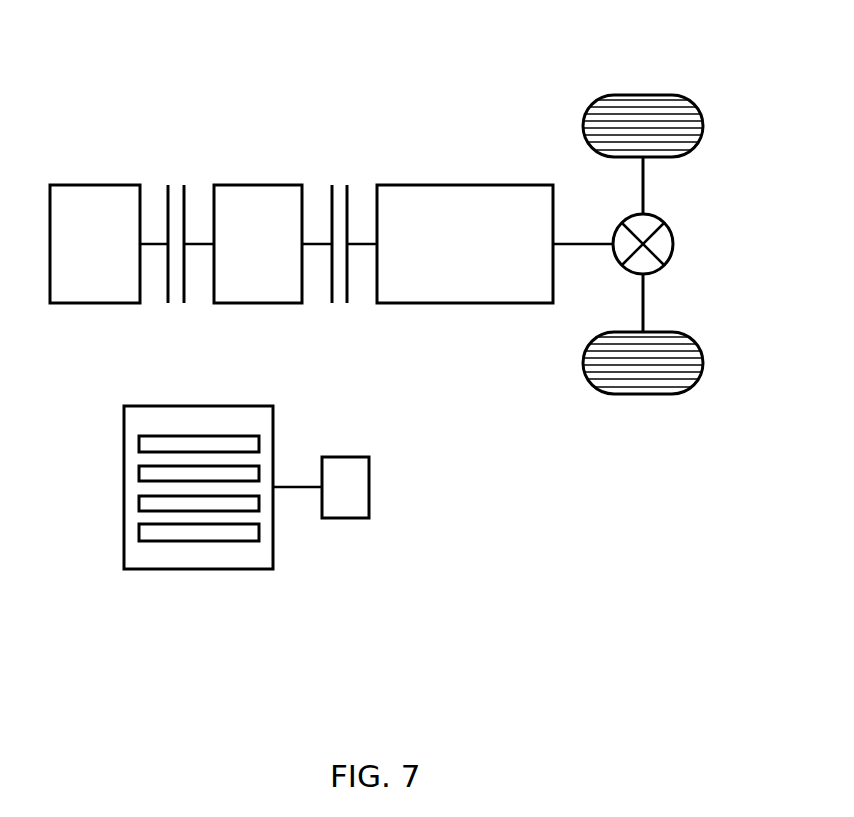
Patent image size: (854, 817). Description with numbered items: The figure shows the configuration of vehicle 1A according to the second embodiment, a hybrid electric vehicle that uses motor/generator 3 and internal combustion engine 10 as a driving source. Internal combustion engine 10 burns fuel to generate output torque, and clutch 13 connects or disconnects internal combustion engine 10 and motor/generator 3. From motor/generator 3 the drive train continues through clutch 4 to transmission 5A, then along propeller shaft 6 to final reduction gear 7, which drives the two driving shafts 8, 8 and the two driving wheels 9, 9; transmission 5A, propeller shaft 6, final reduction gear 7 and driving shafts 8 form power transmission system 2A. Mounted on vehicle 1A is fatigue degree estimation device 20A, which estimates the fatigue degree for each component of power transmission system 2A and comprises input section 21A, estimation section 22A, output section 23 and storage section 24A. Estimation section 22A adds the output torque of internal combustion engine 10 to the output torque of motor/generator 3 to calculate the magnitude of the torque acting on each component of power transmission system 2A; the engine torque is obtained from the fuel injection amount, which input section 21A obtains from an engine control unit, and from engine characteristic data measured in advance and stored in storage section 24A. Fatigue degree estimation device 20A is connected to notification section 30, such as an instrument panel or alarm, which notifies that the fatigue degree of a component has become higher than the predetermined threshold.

The vehicle 1A is at (199, 93).
The power transmission system 2A is at (496, 334).
The internal combustion engine 10 is at (94, 184).
The clutch 13 is at (177, 183).
The motor/generator 3 is at (256, 184).
The clutch 4 is at (339, 183).
The transmission 5A is at (463, 184).
The propeller shaft 6 is at (583, 242).
The final reduction gear 7 is at (673, 243).
The driving shaft 8 is at (645, 185).
The driving wheel 9 is at (703, 128).
The fatigue degree estimation device 20A is at (258, 571).
The input section 21A is at (198, 435).
The estimation section 22A is at (139, 474).
The output section 23 is at (139, 504).
The storage section 24A is at (197, 542).
The notification section 30 is at (345, 521).